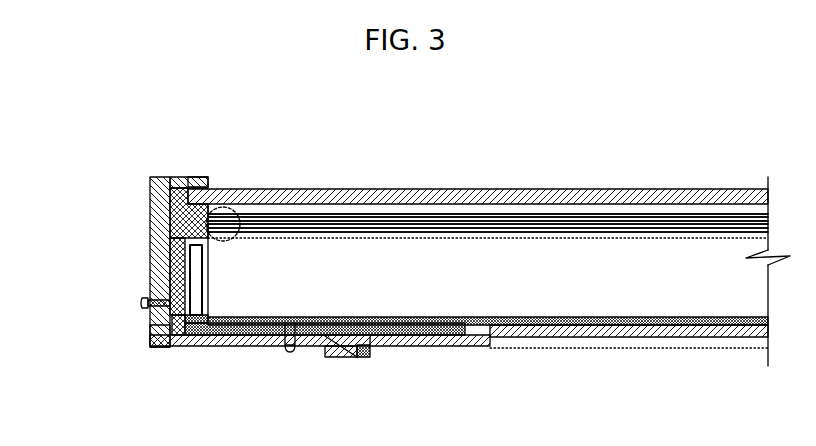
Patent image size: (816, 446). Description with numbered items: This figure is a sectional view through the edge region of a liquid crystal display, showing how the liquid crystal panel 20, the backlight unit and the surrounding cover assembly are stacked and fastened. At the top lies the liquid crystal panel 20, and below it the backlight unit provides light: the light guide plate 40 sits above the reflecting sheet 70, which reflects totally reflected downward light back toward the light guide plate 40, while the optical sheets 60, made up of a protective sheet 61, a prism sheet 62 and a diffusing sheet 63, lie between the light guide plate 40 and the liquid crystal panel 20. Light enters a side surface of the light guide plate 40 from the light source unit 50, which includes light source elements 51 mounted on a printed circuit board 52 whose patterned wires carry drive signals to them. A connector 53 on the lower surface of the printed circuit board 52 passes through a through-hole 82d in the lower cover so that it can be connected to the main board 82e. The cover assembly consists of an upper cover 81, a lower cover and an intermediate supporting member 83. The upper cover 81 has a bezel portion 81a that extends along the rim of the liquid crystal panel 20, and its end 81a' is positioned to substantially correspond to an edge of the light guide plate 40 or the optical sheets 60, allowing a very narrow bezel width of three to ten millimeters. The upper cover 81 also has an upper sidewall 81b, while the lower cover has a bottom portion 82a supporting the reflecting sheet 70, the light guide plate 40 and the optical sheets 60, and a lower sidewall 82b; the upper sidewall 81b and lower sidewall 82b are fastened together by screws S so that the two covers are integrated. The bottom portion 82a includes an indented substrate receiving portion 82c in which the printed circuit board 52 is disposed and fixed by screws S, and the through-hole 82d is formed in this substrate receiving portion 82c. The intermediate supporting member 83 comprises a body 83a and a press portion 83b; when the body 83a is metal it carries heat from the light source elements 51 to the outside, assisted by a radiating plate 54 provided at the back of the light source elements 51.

The liquid crystal panel 20 is at (610, 196).
The light guide plate 40 is at (540, 244).
The light source unit 50 is at (314, 365).
The light source elements 51 is at (210, 347).
The printed circuit board 52 is at (235, 347).
The connector 53 is at (362, 357).
The radiating plate 54 is at (174, 350).
The optical sheets 60 is at (488, 172).
The protective sheet 61 is at (667, 220).
The prism sheet 62 is at (700, 225).
The diffusing sheet 63 is at (728, 229).
The reflecting sheet 70 is at (682, 325).
The upper cover 81 is at (120, 252).
The bezel portion 81a is at (138, 173).
The end of the bezel portion 81a' is at (207, 154).
The upper sidewall 81b is at (150, 210).
The bottom portion 82a is at (537, 337).
The lower sidewall 82b is at (150, 328).
The substrate receiving portion 82c is at (430, 346).
The through-hole 82d is at (330, 357).
The main board 82e is at (627, 348).
The intermediate supporting member 83 is at (120, 260).
The body 83a is at (150, 281).
The press portion 83b is at (173, 233).
The screws S is at (147, 305).